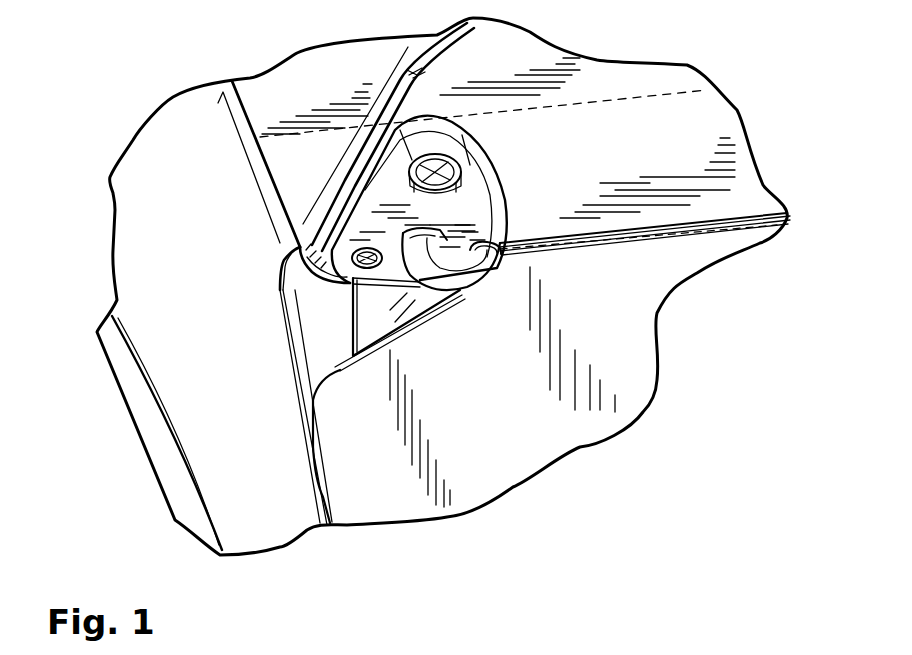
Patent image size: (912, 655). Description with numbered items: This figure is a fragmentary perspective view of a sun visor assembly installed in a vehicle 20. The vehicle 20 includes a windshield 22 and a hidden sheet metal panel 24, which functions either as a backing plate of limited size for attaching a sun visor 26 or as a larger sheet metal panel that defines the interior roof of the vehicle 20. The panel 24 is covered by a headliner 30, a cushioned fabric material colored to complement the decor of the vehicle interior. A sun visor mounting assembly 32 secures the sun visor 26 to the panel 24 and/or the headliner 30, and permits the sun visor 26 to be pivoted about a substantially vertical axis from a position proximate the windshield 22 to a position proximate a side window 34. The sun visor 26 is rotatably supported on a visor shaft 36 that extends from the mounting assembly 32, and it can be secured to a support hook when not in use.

The vehicle 20 is at (752, 93).
The windshield 22 is at (390, 318).
The hidden sheet metal panel 24 is at (648, 123).
The sun visor 26 is at (483, 414).
The headliner 30 is at (275, 100).
The sun visor mounting assembly 32 is at (487, 150).
The side window 34 is at (150, 420).
The visor shaft 36 is at (497, 288).